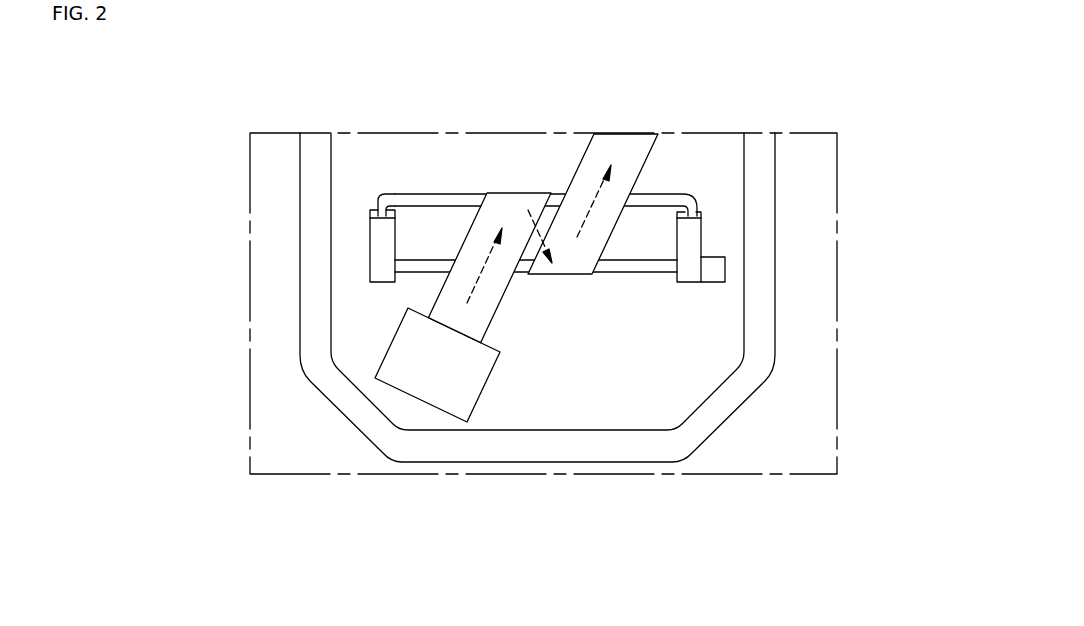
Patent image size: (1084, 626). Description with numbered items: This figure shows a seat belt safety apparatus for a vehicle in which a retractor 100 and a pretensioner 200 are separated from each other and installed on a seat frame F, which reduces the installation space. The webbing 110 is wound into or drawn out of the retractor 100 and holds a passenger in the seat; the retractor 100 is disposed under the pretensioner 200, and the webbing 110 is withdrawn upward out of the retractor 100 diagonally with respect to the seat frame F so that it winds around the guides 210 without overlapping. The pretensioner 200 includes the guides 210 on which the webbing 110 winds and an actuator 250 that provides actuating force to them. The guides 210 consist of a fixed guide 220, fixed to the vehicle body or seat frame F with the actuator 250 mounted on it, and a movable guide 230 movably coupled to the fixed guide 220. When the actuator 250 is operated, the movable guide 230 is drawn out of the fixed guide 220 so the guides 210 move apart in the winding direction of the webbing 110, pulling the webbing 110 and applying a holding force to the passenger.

The retractor 100 is at (443, 383).
The webbing 110 is at (625, 150).
The pretensioner 200 is at (628, 276).
The guides 210 is at (384, 186).
The fixed guide 220 is at (412, 266).
The movable guide 230 is at (426, 200).
The actuator 250 is at (715, 268).
The seat frame F is at (570, 355).